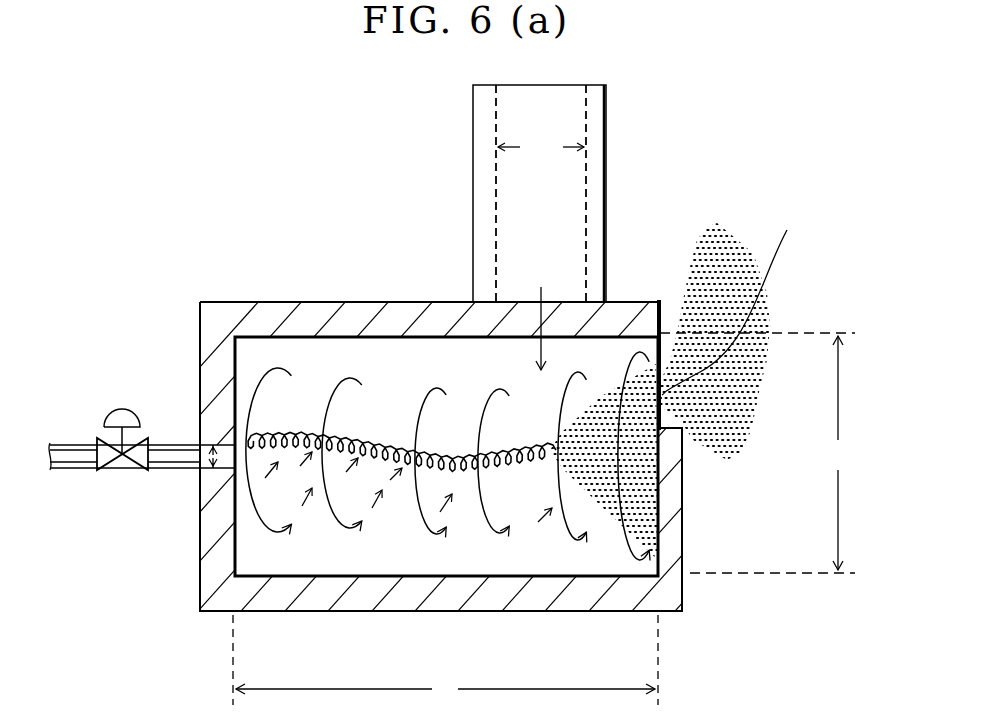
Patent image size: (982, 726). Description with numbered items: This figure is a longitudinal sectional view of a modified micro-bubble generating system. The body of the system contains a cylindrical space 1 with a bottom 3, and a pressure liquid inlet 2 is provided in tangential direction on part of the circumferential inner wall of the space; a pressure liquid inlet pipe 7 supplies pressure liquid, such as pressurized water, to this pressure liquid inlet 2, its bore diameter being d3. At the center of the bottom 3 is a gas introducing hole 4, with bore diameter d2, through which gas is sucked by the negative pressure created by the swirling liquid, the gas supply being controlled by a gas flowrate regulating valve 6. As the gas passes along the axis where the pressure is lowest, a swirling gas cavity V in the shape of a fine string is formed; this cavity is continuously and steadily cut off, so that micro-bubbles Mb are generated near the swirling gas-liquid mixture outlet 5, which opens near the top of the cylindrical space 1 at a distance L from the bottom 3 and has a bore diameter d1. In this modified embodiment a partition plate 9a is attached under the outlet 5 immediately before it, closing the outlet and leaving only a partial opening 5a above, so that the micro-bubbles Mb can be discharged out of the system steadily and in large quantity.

The cylindrical space 1 is at (282, 350).
The pressure liquid inlet 2 is at (578, 312).
The bottom of cylindrical space 3 is at (230, 559).
The gas introducing hole 4 is at (210, 470).
The swirling gas-liquid mixture outlet 5 is at (666, 350).
The partial opening 5a is at (742, 298).
The gas flowrate regulating valve 6 is at (110, 463).
The pressure liquid inlet pipe 7 is at (598, 195).
The partition plate 9a is at (683, 540).
The swirling gas cavity V is at (340, 440).
The micro-bubbles Mb is at (705, 388).
The bore diameter of swirling gas-liquid mixture outlet d1 is at (757, 453).
The bore diameter of gas introducing hole d2 is at (200, 446).
The bore diameter of pressure liquid introducing hole d3 is at (541, 149).
The distance between swirling gas-liquid mixture outlet and bottom of cylindrical sp L is at (445, 663).